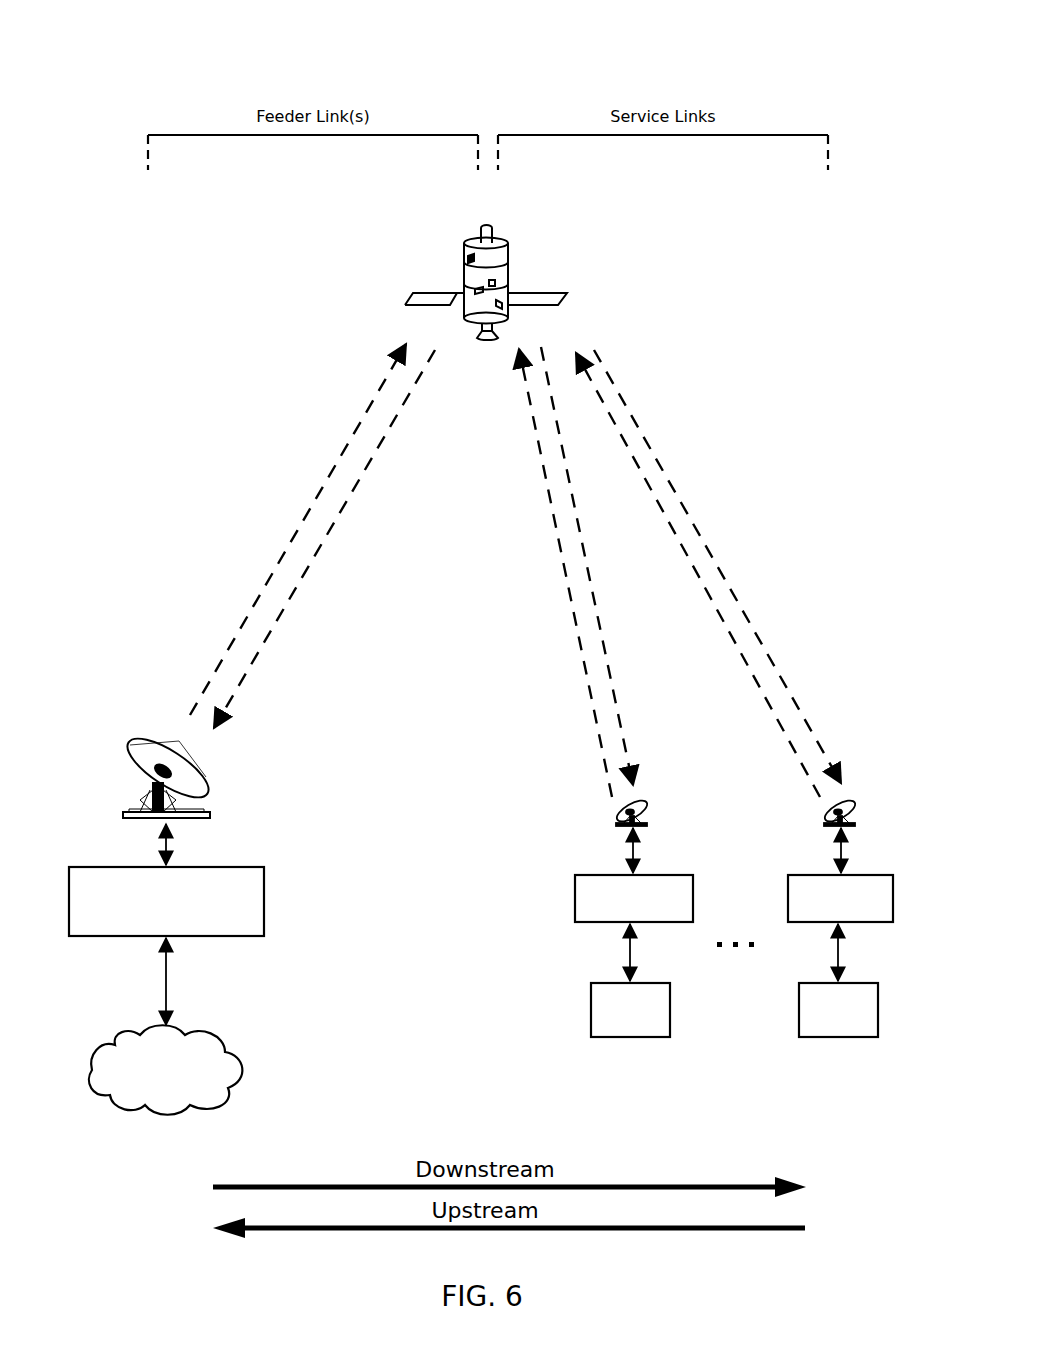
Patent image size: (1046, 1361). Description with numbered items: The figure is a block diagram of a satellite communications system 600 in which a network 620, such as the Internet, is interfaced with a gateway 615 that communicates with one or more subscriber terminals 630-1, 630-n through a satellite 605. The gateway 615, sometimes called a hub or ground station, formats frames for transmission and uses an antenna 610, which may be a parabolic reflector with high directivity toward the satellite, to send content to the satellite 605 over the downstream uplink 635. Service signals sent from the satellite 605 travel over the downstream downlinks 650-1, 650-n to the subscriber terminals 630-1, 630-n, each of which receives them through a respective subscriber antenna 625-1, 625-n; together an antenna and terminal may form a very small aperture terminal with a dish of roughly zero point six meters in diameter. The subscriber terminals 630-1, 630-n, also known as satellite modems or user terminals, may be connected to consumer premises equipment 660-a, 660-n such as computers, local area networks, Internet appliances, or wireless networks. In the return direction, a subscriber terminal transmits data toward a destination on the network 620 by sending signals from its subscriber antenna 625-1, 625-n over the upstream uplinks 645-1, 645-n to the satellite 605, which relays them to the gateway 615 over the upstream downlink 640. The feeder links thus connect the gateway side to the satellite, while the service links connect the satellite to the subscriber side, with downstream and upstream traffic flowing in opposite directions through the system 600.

The satellite communications system 600 is at (514, 52).
The satellite 605 is at (487, 228).
The antenna 610 is at (206, 786).
The gateway 615 is at (264, 900).
The network 620 is at (245, 1075).
The subscriber antenna 625-1 is at (618, 812).
The subscriber antenna 625-n is at (826, 812).
The subscriber terminal 630-1 is at (575, 893).
The subscriber terminal 630-n is at (788, 893).
The downstream uplink 635 is at (300, 528).
The upstream downlink 640 is at (368, 466).
The upstream uplink 645-1 is at (570, 570).
The upstream uplink 645-n is at (700, 575).
The downstream downlink 650-1 is at (610, 672).
The downstream downlink 650-n is at (652, 456).
The consumer premises equipment 660-a is at (618, 1037).
The consumer premises equipment 660-n is at (826, 1037).